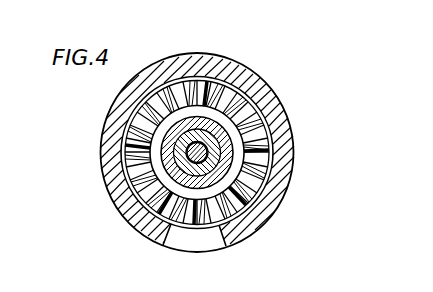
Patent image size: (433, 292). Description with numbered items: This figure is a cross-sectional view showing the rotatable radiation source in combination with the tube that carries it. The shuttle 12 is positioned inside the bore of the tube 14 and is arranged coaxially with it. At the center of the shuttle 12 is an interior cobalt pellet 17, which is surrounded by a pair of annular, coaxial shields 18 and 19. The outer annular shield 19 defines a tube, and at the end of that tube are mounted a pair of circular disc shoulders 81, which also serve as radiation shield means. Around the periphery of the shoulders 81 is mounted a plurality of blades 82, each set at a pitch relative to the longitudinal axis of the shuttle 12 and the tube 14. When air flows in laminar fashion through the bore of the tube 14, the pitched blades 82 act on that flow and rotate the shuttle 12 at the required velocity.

The shuttle 12 is at (203, 124).
The tube 14 is at (276, 98).
The cobalt pellet 17 is at (192, 153).
The annular shield 18 is at (190, 158).
The annular shield 19 is at (168, 145).
The disc shoulders 81 is at (233, 148).
The blades 82 is at (247, 194).